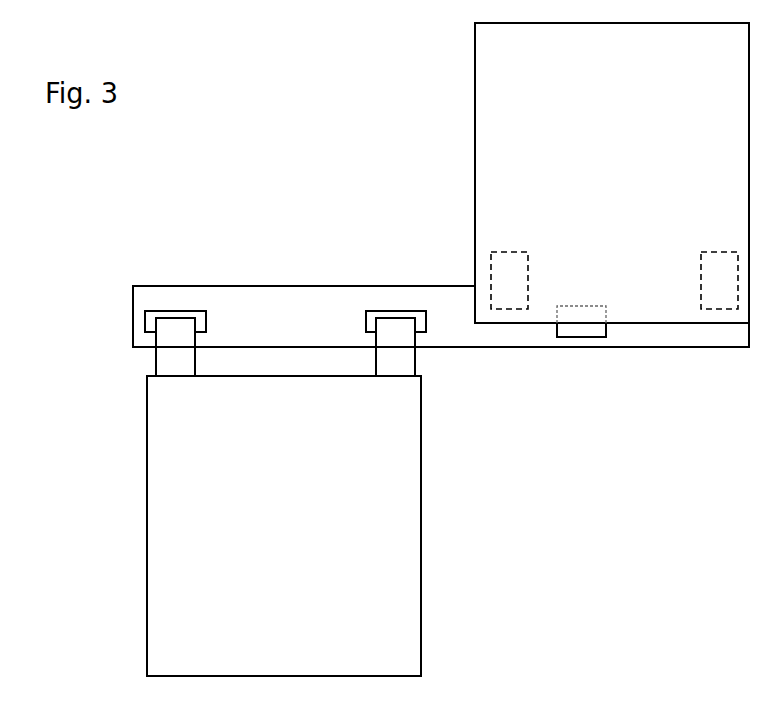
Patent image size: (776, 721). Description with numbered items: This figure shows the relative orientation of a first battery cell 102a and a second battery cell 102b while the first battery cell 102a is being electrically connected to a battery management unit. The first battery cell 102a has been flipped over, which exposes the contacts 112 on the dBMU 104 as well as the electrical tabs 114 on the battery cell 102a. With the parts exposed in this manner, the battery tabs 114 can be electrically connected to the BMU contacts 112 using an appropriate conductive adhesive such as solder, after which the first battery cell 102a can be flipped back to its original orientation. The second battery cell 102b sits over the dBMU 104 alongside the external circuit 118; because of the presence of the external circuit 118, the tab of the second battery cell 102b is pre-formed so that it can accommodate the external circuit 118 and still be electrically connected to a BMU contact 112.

The first battery cell 102a is at (284, 526).
The second battery cell 102b is at (612, 173).
The dBMU 104 is at (441, 316).
The BMU contact 112 is at (150, 310).
The electrical tab 114 is at (447, 314).
The external circuit 118 is at (590, 337).